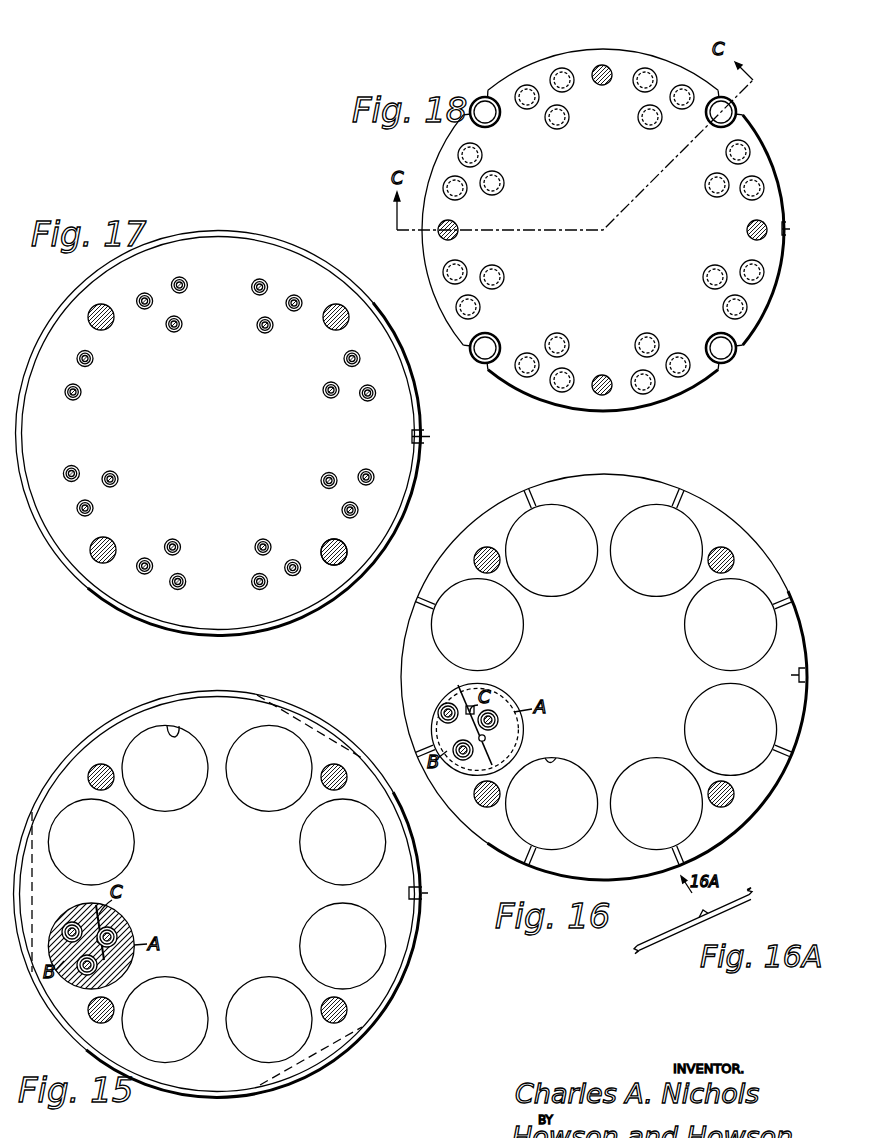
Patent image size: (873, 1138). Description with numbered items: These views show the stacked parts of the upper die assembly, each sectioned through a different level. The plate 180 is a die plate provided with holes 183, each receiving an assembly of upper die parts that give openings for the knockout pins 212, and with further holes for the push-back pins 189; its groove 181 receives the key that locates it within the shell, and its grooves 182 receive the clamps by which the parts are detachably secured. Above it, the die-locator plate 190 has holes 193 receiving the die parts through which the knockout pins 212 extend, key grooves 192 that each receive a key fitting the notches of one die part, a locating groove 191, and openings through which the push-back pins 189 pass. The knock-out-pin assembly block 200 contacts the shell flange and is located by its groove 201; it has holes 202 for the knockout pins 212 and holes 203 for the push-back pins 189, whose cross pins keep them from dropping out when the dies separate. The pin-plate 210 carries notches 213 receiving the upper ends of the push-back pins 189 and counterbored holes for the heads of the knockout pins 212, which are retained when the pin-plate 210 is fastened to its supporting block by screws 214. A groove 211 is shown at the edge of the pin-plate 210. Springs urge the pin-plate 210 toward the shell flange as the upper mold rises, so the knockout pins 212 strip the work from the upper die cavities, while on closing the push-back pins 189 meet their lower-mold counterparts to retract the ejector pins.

In FIG. 15, the plate 180 is at (401, 950).
In FIG. 15, the groove 181 is at (435, 894).
In FIG. 15, the grooves 182 is at (315, 726).
In FIG. 15, the holes 183 is at (171, 729).
In FIG. 17, the push-back pins 189 is at (104, 305).
In FIG. 18, the push-back pins 189 is at (491, 122).
In FIG. 16, the push-back pins 189 is at (486, 547).
In FIG. 15, the push-back pins 189 is at (103, 764).
In FIG. 16, the plate 190 is at (759, 805).
In FIG. 16A, the plate 190 is at (748, 899).
In FIG. 16, the groove 191 is at (791, 676).
In FIG. 16, the key grooves 192 is at (675, 858).
In FIG. 16A, the key grooves 192 is at (698, 917).
In FIG. 16, the holes 193 is at (553, 760).
In FIG. 17, the knock-out-pin assembly block 200 is at (270, 226).
In FIG. 17, the groove 201 is at (437, 439).
In FIG. 17, the holes 202 is at (168, 540).
In FIG. 17, the holes 203 is at (332, 544).
In FIG. 18, the pin-plate 210 is at (775, 288).
In FIG. 18, the flange 211 is at (802, 230).
In FIG. 17, the knockout pins 212 is at (108, 470).
In FIG. 18, the knockout pins 212 is at (568, 372).
In FIG. 16, the knockout pins 212 is at (445, 706).
In FIG. 15, the knockout pins 212 is at (69, 924).
In FIG. 18, the notches 213 is at (723, 363).
In FIG. 18, the screws 214 is at (459, 228).